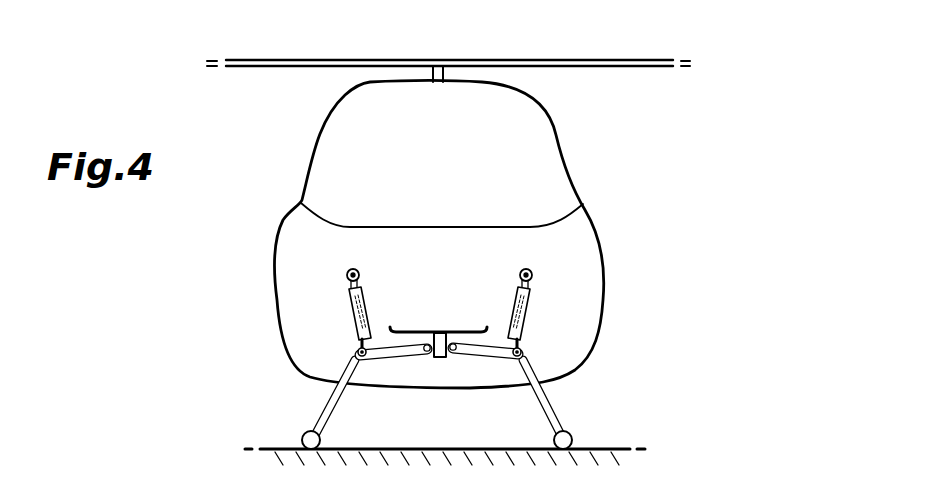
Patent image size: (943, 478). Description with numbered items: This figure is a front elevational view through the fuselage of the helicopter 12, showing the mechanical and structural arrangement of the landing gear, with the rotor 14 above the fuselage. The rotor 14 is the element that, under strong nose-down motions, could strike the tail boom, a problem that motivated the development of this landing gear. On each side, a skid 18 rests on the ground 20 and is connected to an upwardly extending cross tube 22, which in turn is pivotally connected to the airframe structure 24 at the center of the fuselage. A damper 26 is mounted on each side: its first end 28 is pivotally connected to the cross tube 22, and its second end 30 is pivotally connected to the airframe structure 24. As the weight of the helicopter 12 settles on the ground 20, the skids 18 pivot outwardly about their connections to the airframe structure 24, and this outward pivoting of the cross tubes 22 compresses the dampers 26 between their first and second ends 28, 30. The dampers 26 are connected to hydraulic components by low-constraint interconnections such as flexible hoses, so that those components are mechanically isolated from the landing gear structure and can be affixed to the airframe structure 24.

The helicopter 12 is at (572, 155).
The rotor 14 is at (563, 34).
The skid 18 is at (562, 440).
The ground 20 is at (417, 449).
The cross tube 22 is at (547, 405).
The airframe structure 24 is at (432, 322).
The damper 26 is at (530, 318).
The first end 28 is at (518, 353).
The second end 30 is at (534, 280).